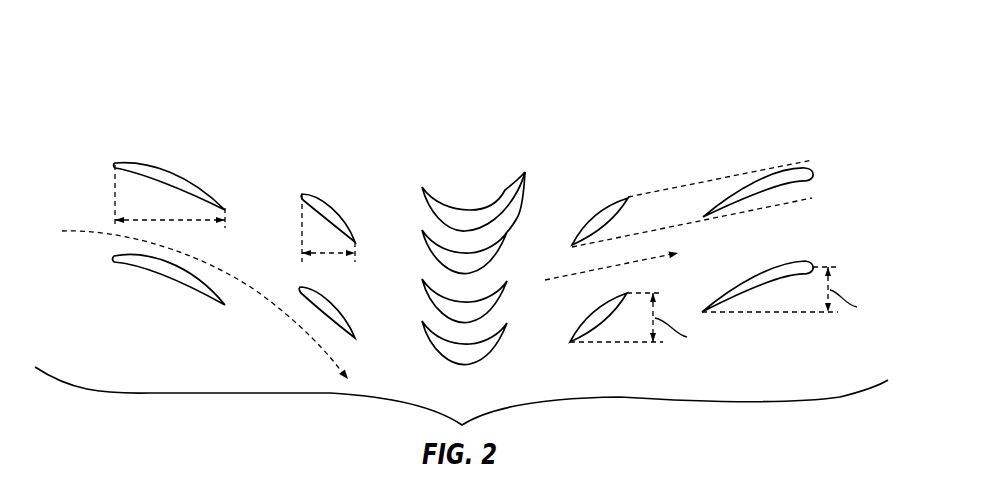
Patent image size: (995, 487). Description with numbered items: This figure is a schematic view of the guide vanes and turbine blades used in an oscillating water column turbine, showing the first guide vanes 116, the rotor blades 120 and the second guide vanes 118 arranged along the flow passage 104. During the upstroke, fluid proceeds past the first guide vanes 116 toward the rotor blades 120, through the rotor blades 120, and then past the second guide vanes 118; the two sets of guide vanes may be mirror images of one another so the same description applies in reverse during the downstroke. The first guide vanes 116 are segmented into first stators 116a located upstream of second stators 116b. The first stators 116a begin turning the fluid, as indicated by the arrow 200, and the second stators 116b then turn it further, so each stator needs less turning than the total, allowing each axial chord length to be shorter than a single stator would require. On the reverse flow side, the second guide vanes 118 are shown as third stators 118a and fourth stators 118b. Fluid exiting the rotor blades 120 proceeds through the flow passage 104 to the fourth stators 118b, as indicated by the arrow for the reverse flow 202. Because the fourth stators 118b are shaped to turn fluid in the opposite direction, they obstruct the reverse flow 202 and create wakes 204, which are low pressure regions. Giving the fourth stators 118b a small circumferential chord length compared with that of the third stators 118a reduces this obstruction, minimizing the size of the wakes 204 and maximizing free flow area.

The flow passage 104 is at (120, 52).
The first guide vanes 116 is at (266, 104).
The first stators 116a is at (152, 163).
The second stators 116b is at (334, 207).
The second guide vanes 118 is at (653, 109).
The third stators 118a is at (812, 178).
The fourth stators 118b is at (605, 203).
The rotor blades 120 is at (525, 174).
The arrow indicating fluid turning 200 is at (280, 313).
The reverse flow 202 is at (580, 273).
The wakes 204 is at (701, 200).